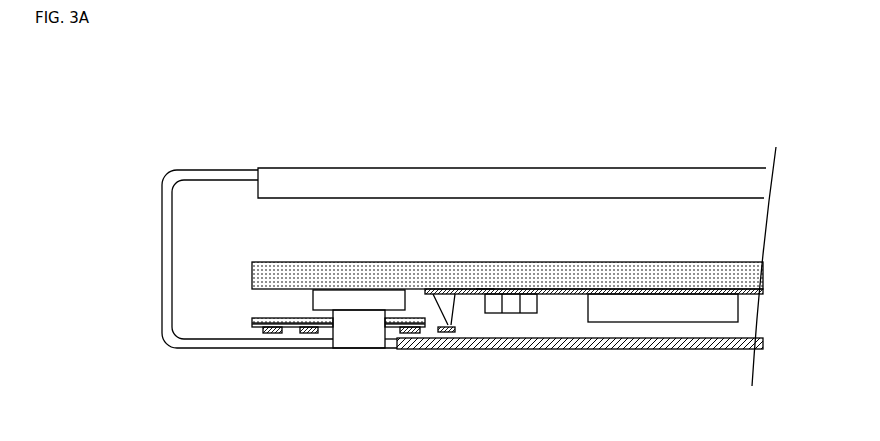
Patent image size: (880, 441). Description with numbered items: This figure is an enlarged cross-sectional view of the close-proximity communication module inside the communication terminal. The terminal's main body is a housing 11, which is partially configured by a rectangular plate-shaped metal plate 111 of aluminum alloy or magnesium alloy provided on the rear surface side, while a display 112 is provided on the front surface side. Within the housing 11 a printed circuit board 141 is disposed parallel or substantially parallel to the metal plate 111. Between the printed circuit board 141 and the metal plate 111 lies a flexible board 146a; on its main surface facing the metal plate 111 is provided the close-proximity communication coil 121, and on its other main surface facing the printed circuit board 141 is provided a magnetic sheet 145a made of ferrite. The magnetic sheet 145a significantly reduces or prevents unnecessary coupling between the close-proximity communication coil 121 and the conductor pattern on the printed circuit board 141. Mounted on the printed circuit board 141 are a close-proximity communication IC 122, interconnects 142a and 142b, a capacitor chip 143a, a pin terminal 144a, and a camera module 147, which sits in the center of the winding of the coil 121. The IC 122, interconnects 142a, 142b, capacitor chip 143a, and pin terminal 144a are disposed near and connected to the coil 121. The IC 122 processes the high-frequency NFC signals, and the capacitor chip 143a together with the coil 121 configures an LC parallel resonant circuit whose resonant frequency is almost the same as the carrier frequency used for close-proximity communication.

The housing 11 is at (213, 168).
The display 112 is at (556, 168).
The printed circuit board 141 is at (252, 277).
The interconnect 142a is at (568, 295).
The interconnect 142b is at (477, 294).
The capacitor chip 143a is at (512, 314).
The pin terminal 144a is at (432, 305).
The magnetic sheet 145a is at (252, 320).
The flexible board 146a is at (257, 331).
The close-proximity communication coil 121 is at (278, 334).
The camera module 147 is at (360, 335).
The close-proximity communication IC 122 is at (636, 323).
The metal plate 111 is at (717, 350).